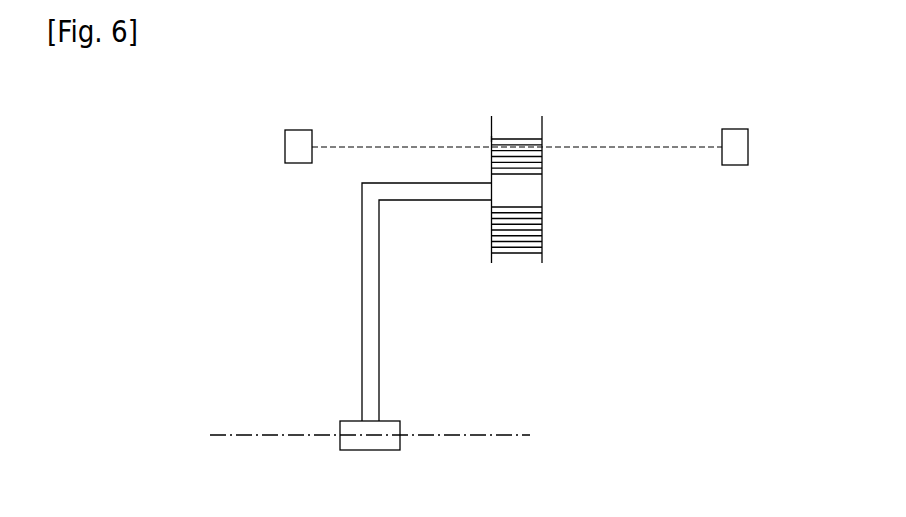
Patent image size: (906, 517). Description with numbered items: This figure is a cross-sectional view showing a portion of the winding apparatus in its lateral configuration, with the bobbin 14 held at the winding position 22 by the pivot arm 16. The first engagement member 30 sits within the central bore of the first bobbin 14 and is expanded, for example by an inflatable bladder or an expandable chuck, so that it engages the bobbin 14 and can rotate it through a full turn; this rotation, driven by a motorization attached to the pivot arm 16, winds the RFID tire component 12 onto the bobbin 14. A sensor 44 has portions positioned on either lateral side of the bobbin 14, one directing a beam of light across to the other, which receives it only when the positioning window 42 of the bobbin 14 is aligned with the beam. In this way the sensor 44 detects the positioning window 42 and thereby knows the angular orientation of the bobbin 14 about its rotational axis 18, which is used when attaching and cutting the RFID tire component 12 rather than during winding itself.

The RFID tire component 12 is at (515, 147).
The first bobbin 14 is at (543, 228).
The pivot arm 16 is at (362, 298).
The rotation axis 18 is at (290, 435).
The winding position 22 is at (594, 164).
The first engagement member 30 is at (535, 190).
The positioning window 42 is at (491, 139).
The sensor 44 is at (300, 166).